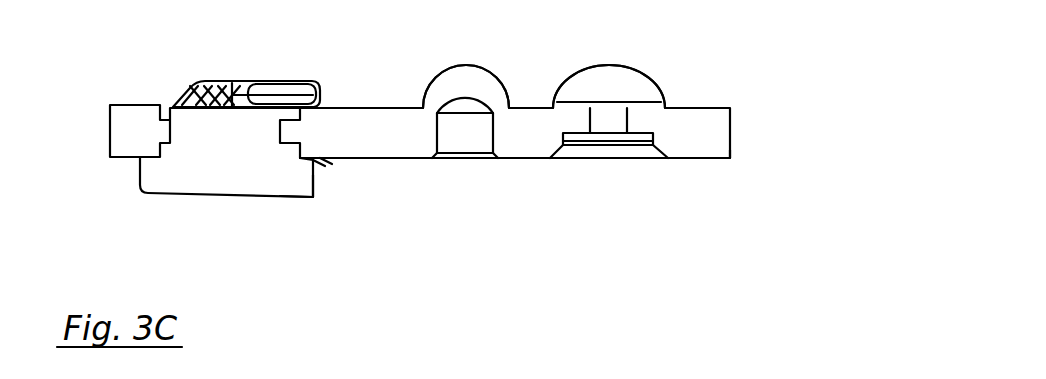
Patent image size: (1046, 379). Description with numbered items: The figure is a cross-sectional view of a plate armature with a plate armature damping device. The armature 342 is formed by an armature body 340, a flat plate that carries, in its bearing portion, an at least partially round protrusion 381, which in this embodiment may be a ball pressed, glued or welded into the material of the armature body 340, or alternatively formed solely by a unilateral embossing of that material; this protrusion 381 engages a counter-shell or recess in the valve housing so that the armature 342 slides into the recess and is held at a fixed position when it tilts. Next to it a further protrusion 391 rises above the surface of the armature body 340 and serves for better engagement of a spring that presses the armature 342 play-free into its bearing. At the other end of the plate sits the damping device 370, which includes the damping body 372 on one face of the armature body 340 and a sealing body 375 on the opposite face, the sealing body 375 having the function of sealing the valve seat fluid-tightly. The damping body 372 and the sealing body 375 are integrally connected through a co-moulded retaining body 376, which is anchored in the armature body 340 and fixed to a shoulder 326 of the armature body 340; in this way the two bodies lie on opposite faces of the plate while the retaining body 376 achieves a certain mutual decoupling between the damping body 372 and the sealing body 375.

The shoulder 326 is at (163, 132).
The armature body 340 is at (707, 123).
The armature 342 is at (723, 162).
The damping device 370 is at (347, 30).
The damping body 372 is at (197, 83).
The sealing body 375 is at (312, 197).
The retaining body 376 is at (210, 133).
The protrusion 381 is at (630, 87).
The protrusion 391 is at (460, 80).